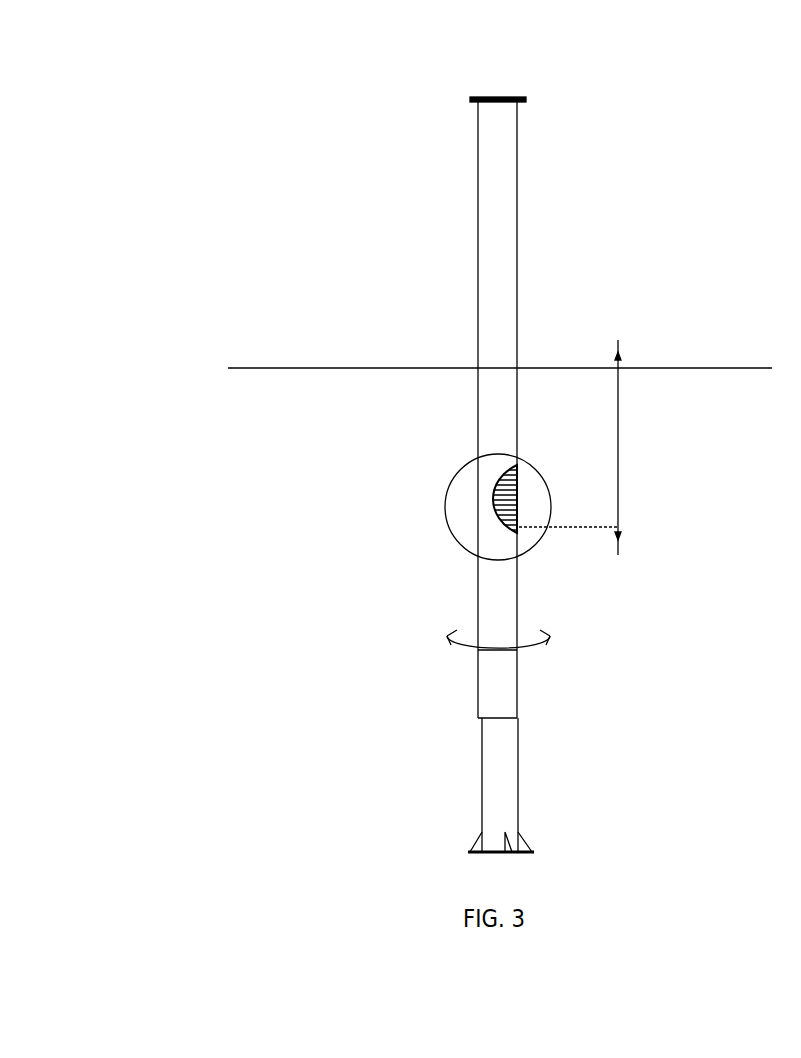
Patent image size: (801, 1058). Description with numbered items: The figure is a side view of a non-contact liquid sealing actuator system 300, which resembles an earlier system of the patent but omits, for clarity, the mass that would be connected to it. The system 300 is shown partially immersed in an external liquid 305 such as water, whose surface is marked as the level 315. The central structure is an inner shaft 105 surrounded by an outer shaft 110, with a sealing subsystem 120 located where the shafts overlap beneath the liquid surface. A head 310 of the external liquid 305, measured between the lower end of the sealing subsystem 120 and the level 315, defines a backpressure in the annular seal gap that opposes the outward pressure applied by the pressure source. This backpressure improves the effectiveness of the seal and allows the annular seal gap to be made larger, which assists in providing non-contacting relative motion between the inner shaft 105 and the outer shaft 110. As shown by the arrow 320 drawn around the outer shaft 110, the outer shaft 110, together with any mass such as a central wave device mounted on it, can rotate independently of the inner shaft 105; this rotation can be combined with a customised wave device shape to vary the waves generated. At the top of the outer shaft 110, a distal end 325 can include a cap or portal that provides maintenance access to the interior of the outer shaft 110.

The inner shaft 105 is at (618, 777).
The outer shaft 110 is at (607, 263).
The sealing subsystem 120 is at (355, 439).
The non-contact liquid sealing actuator system 300 is at (284, 150).
The external liquid 305 is at (319, 574).
The head 310 is at (618, 465).
The level 315 is at (397, 368).
The arrow 320 is at (358, 708).
The distal end 325 is at (607, 120).